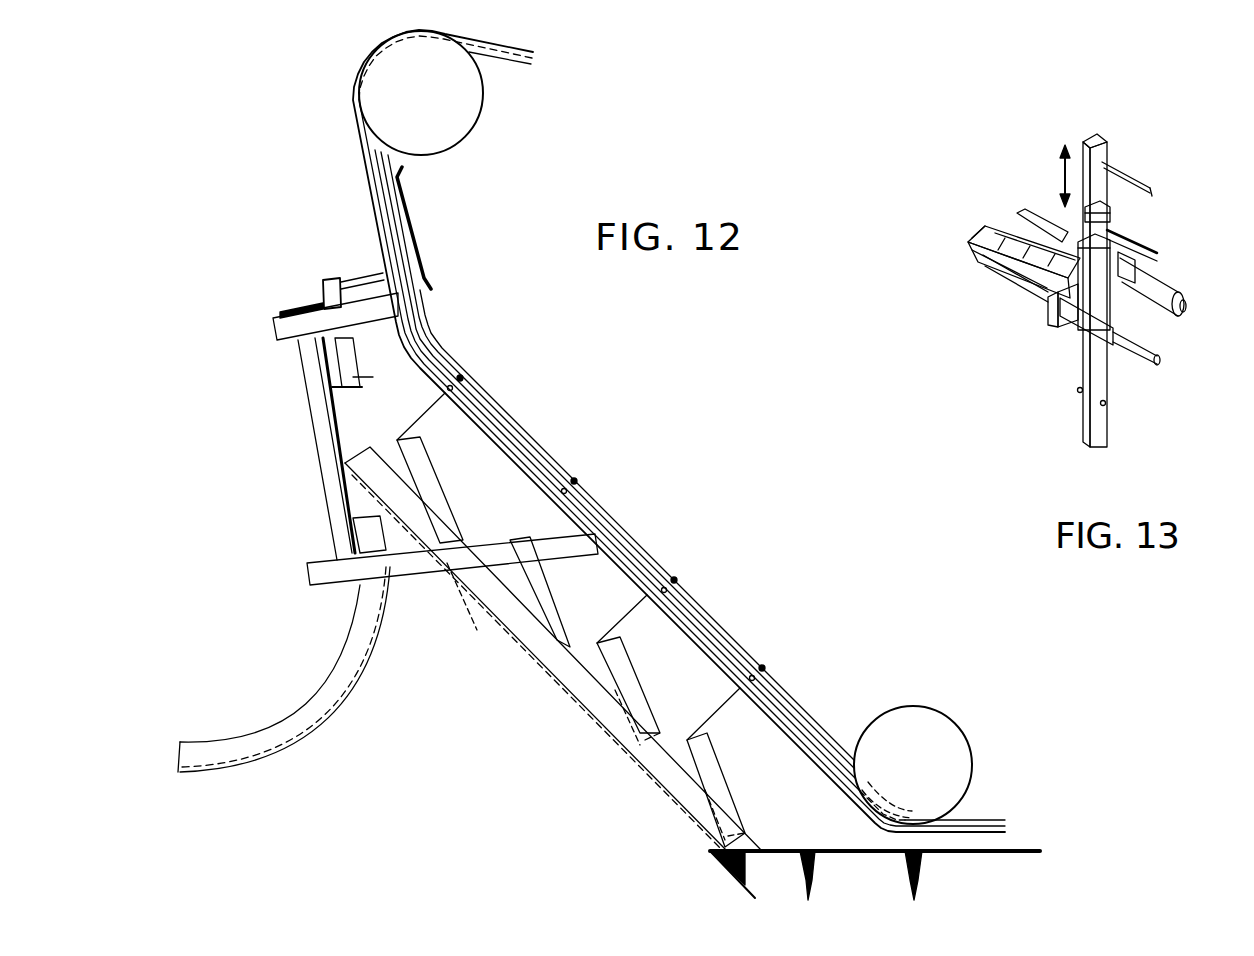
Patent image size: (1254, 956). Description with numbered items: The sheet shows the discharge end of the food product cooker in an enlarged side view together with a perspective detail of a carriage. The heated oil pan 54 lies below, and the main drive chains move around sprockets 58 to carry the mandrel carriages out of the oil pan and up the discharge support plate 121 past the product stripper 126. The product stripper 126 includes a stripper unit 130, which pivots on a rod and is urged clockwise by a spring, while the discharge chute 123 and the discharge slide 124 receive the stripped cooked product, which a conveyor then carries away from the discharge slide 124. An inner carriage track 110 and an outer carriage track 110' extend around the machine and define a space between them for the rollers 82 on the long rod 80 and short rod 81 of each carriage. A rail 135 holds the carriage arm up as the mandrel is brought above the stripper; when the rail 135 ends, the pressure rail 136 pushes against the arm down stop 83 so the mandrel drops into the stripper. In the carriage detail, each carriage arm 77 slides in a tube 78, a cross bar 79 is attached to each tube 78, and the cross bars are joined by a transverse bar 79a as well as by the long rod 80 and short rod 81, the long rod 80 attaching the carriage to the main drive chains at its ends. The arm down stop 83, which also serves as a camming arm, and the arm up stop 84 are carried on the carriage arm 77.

In FIG. 12, the sprockets 58 is at (445, 100).
In FIG. 12, the pressure rail 136 is at (405, 212).
In FIG. 12, the stripper unit 130 is at (316, 292).
In FIG. 12, the product stripper 126 is at (238, 411).
In FIG. 12, the discharge chute 123 is at (327, 462).
In FIG. 12, the rail 135 is at (655, 515).
In FIG. 12, the arm down stop 83 is at (678, 578).
In FIG. 13, the arm down stop 83 is at (1150, 194).
In FIG. 12, the inner carriage track 110 is at (610, 569).
In FIG. 12, the outer carriage track 110' is at (784, 756).
In FIG. 12, the discharge support plate 121 is at (588, 690).
In FIG. 12, the discharge slide 124 is at (290, 733).
In FIG. 12, the heated oil pan 54 is at (875, 875).
In FIG. 13, the carriage arm 77 is at (1105, 437).
In FIG. 13, the tube 78 is at (1030, 295).
In FIG. 13, the cross bar 79 is at (1130, 265).
In FIG. 13, the transverse bar 79a is at (990, 228).
In FIG. 13, the long rod 80 is at (980, 262).
In FIG. 13, the short rod 81 is at (1185, 305).
In FIG. 13, the rollers 82 is at (1075, 345).
In FIG. 13, the arm up stop 84 is at (1104, 405).